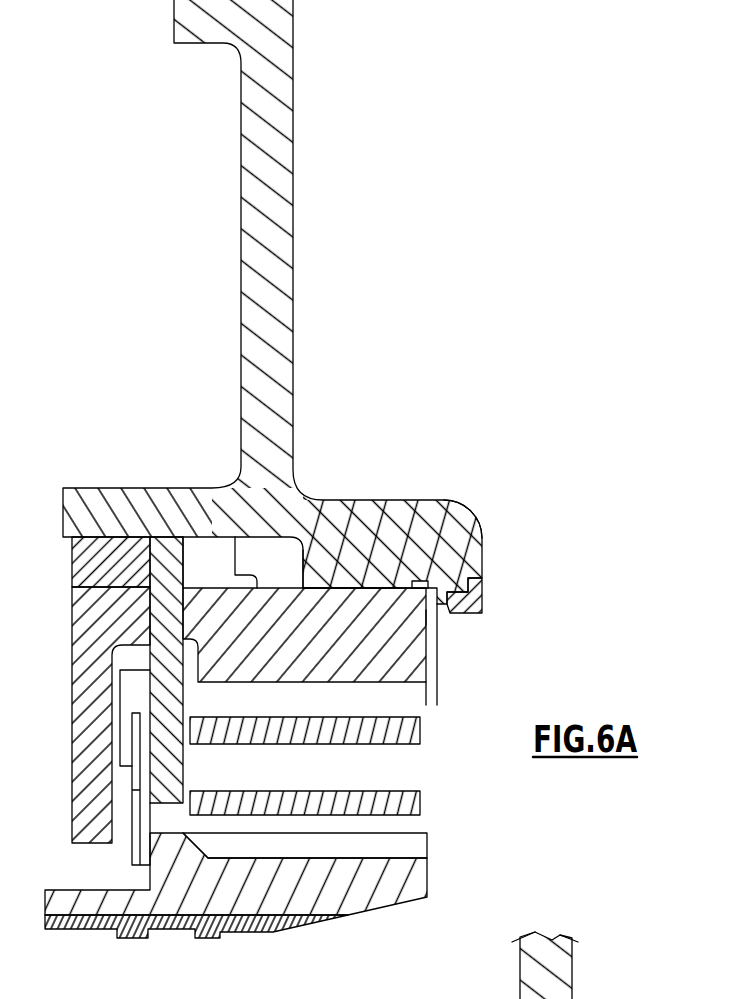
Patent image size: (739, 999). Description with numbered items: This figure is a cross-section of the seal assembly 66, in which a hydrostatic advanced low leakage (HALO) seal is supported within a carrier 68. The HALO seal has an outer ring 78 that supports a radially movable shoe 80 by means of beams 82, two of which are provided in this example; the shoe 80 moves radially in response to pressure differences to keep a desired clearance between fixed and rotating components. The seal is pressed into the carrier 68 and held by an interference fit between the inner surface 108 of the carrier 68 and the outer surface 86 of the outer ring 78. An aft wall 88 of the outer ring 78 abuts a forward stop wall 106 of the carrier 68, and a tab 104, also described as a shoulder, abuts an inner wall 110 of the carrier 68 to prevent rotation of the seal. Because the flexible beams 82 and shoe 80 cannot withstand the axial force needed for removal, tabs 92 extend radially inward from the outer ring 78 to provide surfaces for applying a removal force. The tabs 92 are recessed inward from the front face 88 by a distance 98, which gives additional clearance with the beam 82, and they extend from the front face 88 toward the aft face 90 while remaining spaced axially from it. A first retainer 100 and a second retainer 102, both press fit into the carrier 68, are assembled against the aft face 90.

The seal assembly 66 is at (545, 509).
The carrier 68 is at (316, 512).
The outer ring 78 is at (470, 520).
The shoe 80 is at (312, 893).
The beams 82 is at (360, 731).
The outer surface 86 is at (340, 578).
The aft wall 88 is at (438, 629).
The aft face 90 is at (167, 622).
The tabs 92 is at (415, 661).
The recessed distance 98 is at (395, 698).
The first retainer 100 is at (142, 700).
The second retainer 102 is at (95, 682).
The tab 104 is at (207, 557).
The forward stop wall 106 is at (498, 565).
The inner surface 108 is at (357, 585).
The inner wall 110 is at (250, 557).